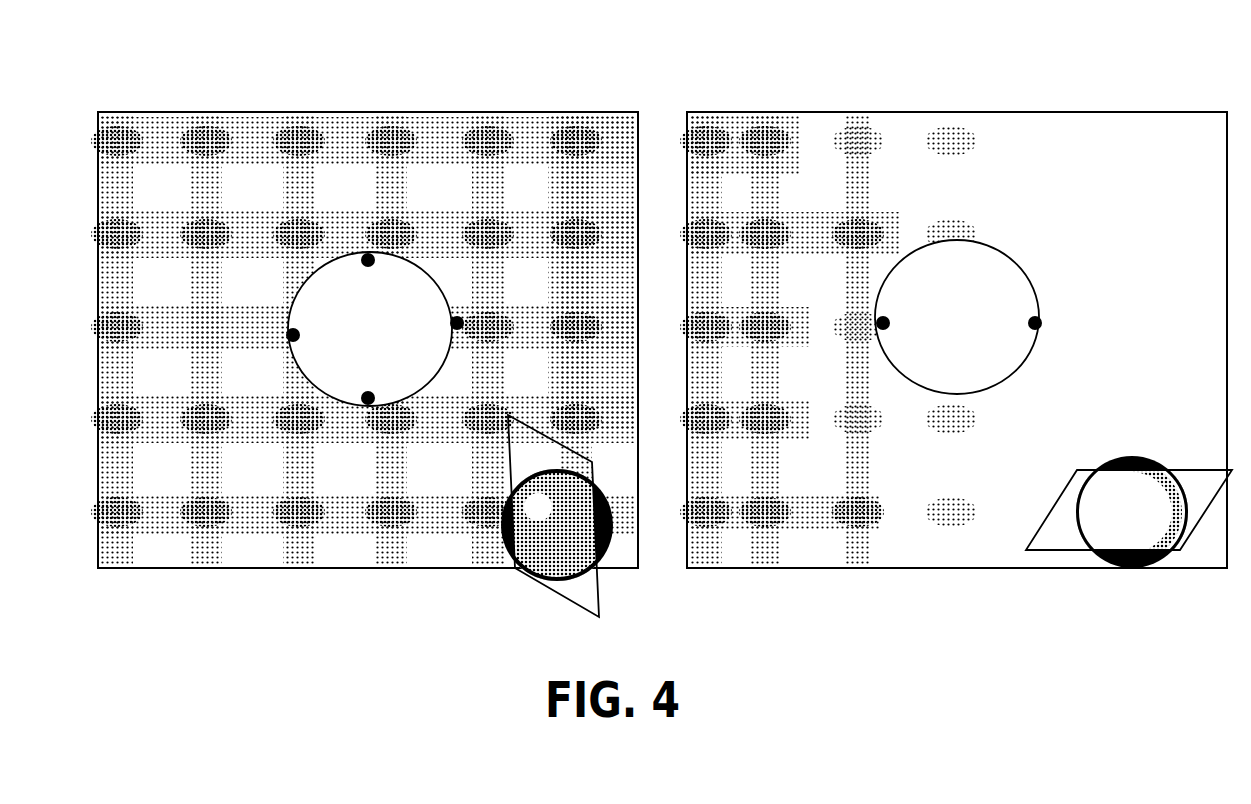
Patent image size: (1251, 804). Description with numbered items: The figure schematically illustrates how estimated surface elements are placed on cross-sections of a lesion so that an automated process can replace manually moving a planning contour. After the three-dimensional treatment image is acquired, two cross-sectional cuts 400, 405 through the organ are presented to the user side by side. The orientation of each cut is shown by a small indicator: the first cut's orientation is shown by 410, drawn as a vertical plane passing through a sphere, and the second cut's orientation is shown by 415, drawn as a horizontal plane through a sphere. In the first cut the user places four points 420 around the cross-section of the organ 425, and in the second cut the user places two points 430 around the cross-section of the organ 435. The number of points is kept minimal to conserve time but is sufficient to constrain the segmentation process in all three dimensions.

The first cross-sectional cut 400 is at (237, 100).
The second cross-sectional cut 405 is at (825, 100).
The orientation indicator of first cut 410 is at (498, 518).
The orientation indicator of second cut 415 is at (1028, 519).
The points 420 is at (373, 215).
The cross-section of the organ 425 is at (362, 353).
The points 430 is at (850, 317).
The cross-section of the organ 435 is at (938, 330).